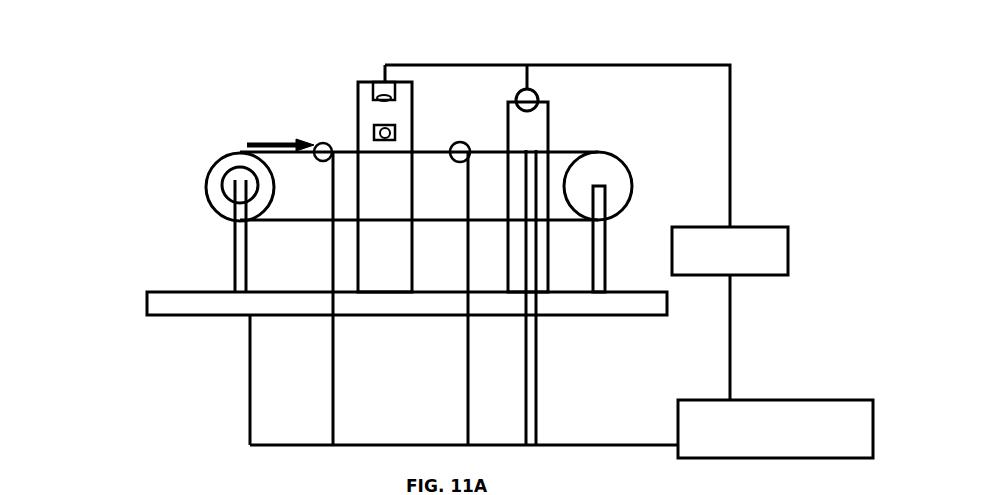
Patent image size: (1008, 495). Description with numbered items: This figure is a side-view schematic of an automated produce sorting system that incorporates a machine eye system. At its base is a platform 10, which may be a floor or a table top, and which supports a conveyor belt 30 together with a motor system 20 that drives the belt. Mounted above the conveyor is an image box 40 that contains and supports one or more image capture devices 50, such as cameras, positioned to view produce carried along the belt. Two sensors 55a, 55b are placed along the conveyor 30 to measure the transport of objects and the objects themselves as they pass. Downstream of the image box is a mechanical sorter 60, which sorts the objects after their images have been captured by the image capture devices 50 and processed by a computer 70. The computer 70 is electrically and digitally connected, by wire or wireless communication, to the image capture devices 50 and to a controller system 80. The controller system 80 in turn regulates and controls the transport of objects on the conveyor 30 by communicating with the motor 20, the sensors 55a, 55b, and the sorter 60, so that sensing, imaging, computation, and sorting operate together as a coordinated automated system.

The platform 10 is at (147, 313).
The motor system 20 is at (228, 186).
The conveyor belt 30 is at (227, 161).
The image box 40 is at (358, 82).
The image capture devices 50 is at (396, 125).
The sensor 55a is at (320, 145).
The sensor 55b is at (460, 143).
The mechanical sorter 60 is at (530, 92).
The computer 70 is at (775, 227).
The controller system 80 is at (800, 400).